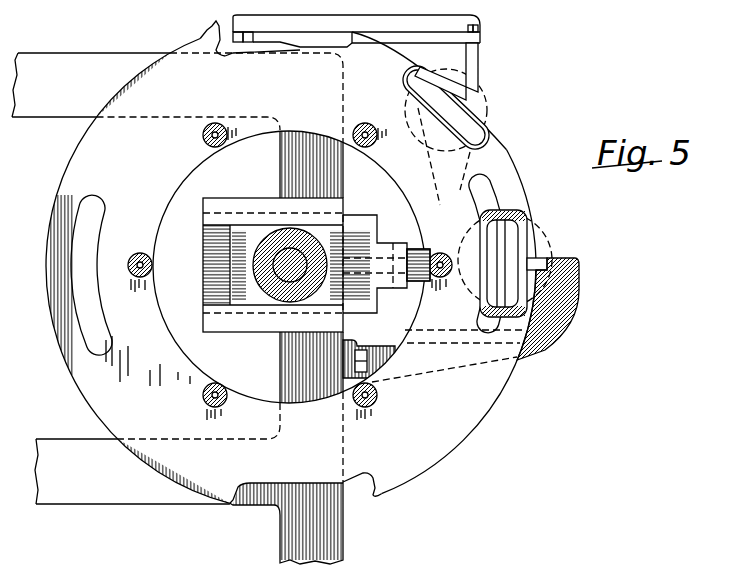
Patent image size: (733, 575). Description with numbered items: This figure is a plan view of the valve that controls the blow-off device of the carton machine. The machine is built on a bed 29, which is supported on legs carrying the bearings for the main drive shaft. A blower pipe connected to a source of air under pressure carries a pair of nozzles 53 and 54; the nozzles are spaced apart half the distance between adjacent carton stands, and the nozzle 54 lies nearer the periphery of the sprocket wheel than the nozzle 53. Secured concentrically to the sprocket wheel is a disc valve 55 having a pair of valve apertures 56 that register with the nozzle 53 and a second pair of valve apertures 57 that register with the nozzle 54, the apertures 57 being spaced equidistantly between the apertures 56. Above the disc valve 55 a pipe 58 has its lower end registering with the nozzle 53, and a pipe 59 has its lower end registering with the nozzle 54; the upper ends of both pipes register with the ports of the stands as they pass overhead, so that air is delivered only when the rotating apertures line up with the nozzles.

The bed 29 is at (128, 493).
The nozzle 53 is at (535, 258).
The nozzle 54 is at (458, 80).
The disc valve 55 is at (503, 370).
The valve apertures 56 is at (486, 188).
The valve apertures 57 is at (372, 497).
The pipe 58 is at (520, 228).
The pipe 59 is at (470, 110).